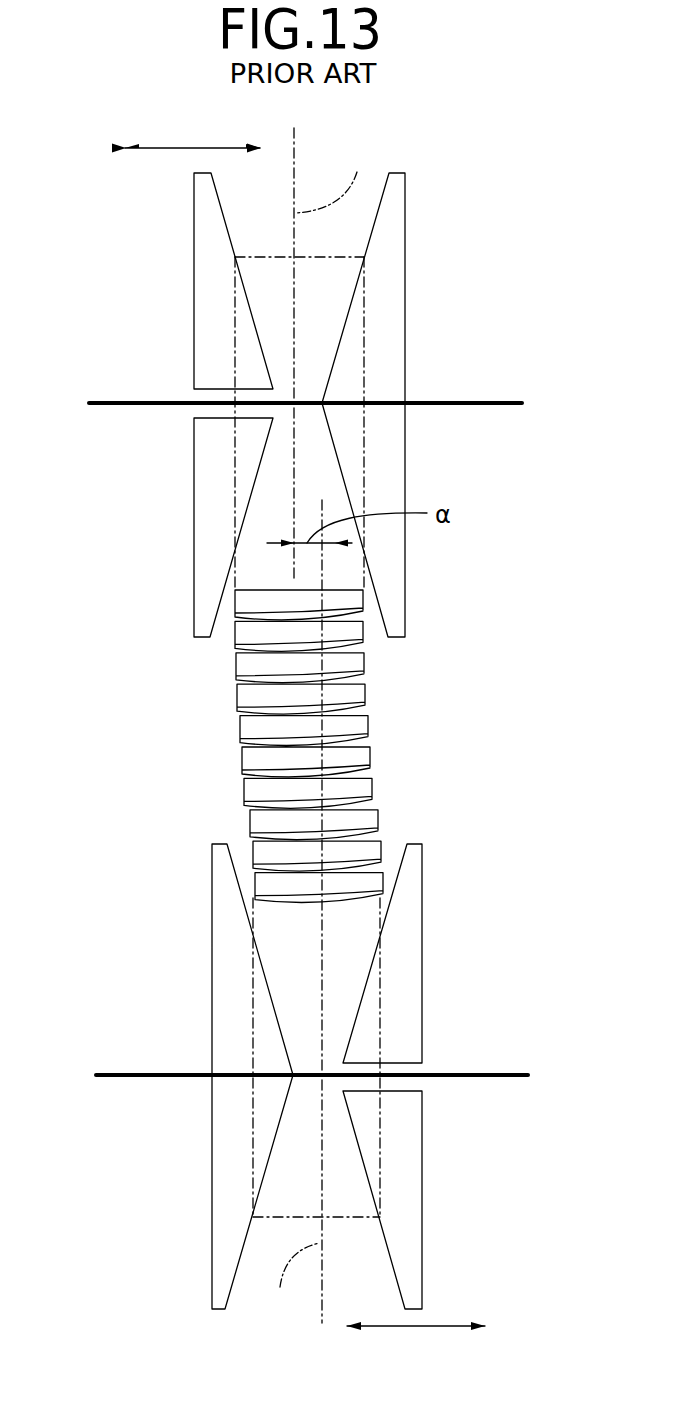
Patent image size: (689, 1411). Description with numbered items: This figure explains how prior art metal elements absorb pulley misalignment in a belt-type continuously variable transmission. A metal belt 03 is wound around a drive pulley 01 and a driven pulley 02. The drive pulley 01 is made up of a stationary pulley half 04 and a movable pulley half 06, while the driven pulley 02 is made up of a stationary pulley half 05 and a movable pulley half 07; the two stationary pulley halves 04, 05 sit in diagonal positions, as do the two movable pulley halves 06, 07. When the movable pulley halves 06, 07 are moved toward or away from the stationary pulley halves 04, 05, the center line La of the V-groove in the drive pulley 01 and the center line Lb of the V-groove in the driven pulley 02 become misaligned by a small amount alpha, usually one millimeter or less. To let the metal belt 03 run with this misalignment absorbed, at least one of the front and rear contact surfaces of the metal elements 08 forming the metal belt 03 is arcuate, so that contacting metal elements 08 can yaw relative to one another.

The drive pulley 01 is at (309, 382).
The driven pulley 02 is at (320, 915).
The metal belt 03 is at (253, 746).
The stationary pulley half 04 is at (383, 303).
The stationary pulley half 05 is at (232, 1165).
The movable pulley half 06 is at (213, 302).
The movable pulley half 07 is at (395, 1167).
The metal elements 08 is at (238, 757).